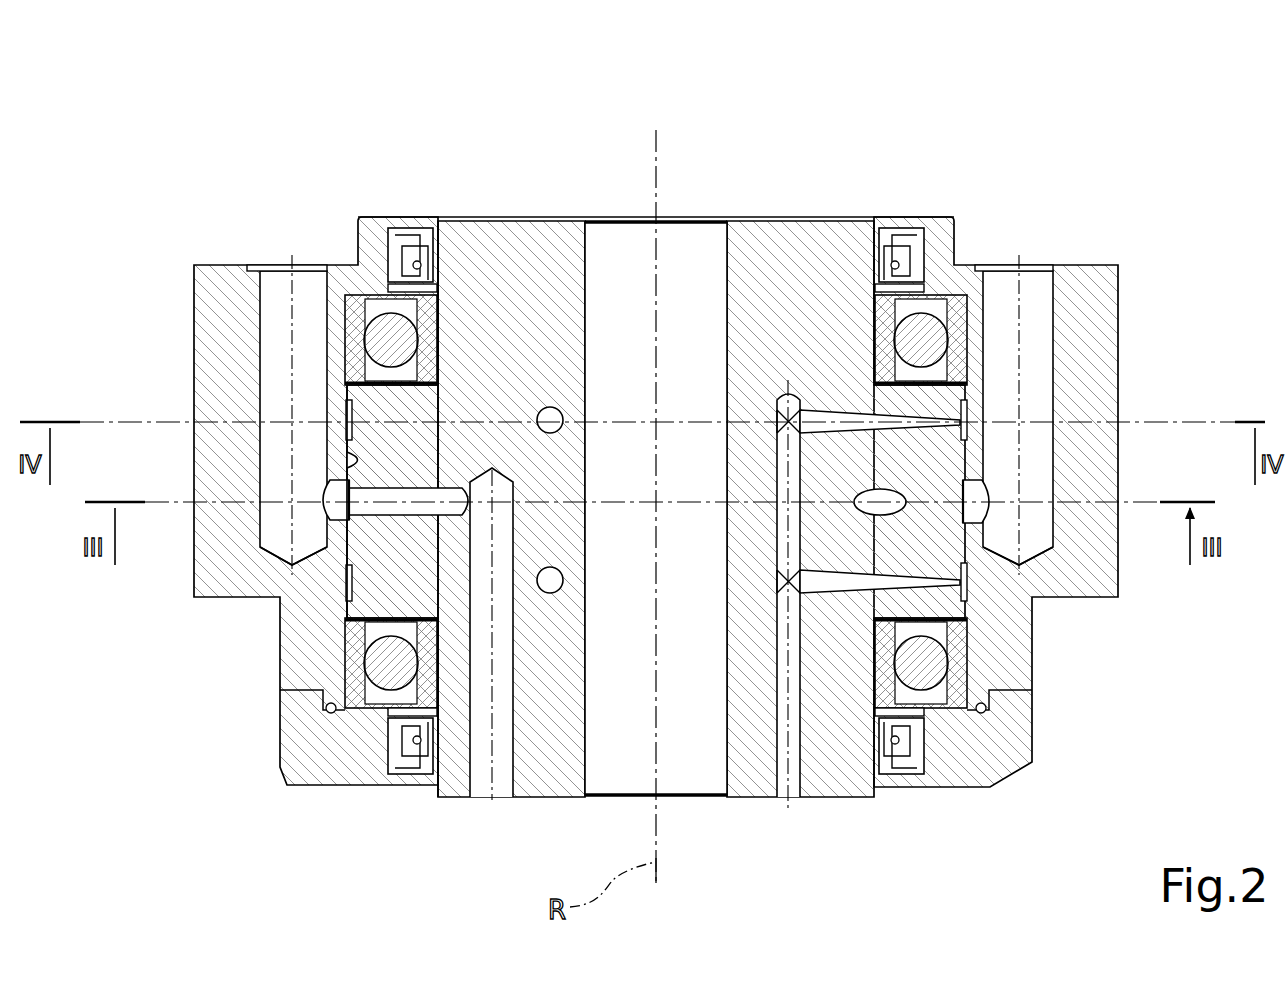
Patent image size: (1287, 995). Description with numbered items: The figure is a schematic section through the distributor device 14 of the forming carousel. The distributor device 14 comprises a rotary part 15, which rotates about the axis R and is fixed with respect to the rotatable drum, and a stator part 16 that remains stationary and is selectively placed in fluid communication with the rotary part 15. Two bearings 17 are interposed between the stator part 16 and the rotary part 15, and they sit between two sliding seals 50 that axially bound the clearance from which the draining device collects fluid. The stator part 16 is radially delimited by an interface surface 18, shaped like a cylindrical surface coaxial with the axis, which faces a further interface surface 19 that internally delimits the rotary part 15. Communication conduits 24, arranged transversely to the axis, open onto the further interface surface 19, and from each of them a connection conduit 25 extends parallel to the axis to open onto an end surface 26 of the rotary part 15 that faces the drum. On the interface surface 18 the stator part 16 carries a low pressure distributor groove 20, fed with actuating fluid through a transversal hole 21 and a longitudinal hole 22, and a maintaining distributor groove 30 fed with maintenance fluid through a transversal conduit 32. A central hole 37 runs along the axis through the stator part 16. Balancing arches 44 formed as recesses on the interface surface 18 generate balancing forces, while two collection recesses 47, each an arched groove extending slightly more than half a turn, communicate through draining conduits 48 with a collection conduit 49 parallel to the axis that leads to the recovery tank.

The distributor device 14 is at (233, 672).
The rotary part 15 is at (208, 306).
The stator part 16 is at (542, 252).
The bearings 17 is at (360, 308).
The interface surface 18 is at (340, 598).
The further interface surface 19 is at (345, 462).
The low pressure distributor groove 20 is at (338, 500).
The transversal hole 21 is at (438, 490).
The longitudinal hole 22 is at (490, 762).
The communication conduits 24 is at (340, 563).
The connection conduit 25 is at (262, 312).
The end surface 26 is at (1090, 265).
The maintaining distributor groove 30 is at (993, 500).
The transversal conduit 32 is at (876, 492).
The central hole 37 is at (588, 270).
The balancing arches 44 is at (325, 413).
The collection recess 47 is at (967, 420).
The draining conduit 48 is at (820, 412).
The collection conduit 49 is at (782, 770).
The sliding seals 50 is at (921, 252).